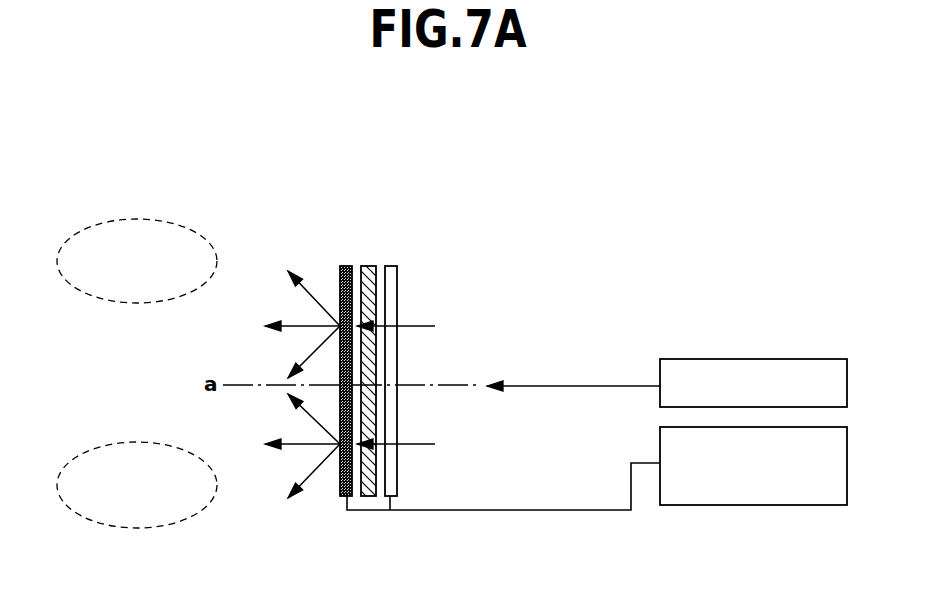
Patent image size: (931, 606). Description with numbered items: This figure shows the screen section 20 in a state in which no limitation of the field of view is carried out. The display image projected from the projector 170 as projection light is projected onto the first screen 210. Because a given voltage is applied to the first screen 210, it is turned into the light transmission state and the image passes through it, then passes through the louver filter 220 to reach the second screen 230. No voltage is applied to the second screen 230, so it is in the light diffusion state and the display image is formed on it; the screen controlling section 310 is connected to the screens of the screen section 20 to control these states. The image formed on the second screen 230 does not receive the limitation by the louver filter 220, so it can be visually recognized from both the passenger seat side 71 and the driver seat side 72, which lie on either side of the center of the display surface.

The screen section 20 is at (457, 299).
The second screen 230 is at (348, 264).
The louver filter 220 is at (363, 266).
The first screen 210 is at (398, 277).
The passenger seat side 71 is at (137, 247).
The driver seat side 72 is at (137, 472).
The projector 170 is at (748, 359).
The screen controlling section 310 is at (758, 505).